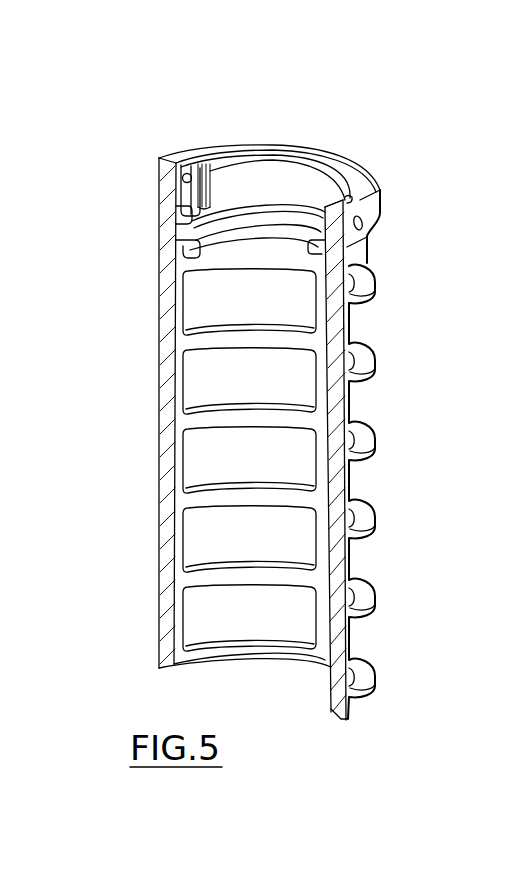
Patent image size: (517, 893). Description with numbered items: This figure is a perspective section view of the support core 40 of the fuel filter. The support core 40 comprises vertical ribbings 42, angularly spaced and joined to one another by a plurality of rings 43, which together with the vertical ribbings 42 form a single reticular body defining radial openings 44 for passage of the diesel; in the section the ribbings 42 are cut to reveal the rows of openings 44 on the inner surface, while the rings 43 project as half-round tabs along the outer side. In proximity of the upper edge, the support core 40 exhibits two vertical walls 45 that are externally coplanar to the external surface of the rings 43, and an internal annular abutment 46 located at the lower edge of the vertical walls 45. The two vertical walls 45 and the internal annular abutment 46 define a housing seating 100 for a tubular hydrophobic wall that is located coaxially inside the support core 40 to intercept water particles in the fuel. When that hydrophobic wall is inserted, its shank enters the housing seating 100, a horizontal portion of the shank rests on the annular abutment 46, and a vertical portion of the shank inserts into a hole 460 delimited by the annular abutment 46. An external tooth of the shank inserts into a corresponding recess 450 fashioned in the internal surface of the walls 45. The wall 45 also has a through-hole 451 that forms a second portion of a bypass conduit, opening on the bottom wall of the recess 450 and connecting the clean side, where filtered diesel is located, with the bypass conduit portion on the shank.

The support core 40 is at (152, 433).
The vertical ribbings 42 is at (162, 592).
The rings 43 is at (376, 298).
The radial openings 44 is at (261, 622).
The vertical walls 45 is at (226, 178).
The internal annular abutment 46 is at (373, 278).
The housing seating 100 is at (311, 200).
The recess 450 is at (182, 220).
The through-hole 451 is at (186, 186).
The hole 460 is at (183, 254).